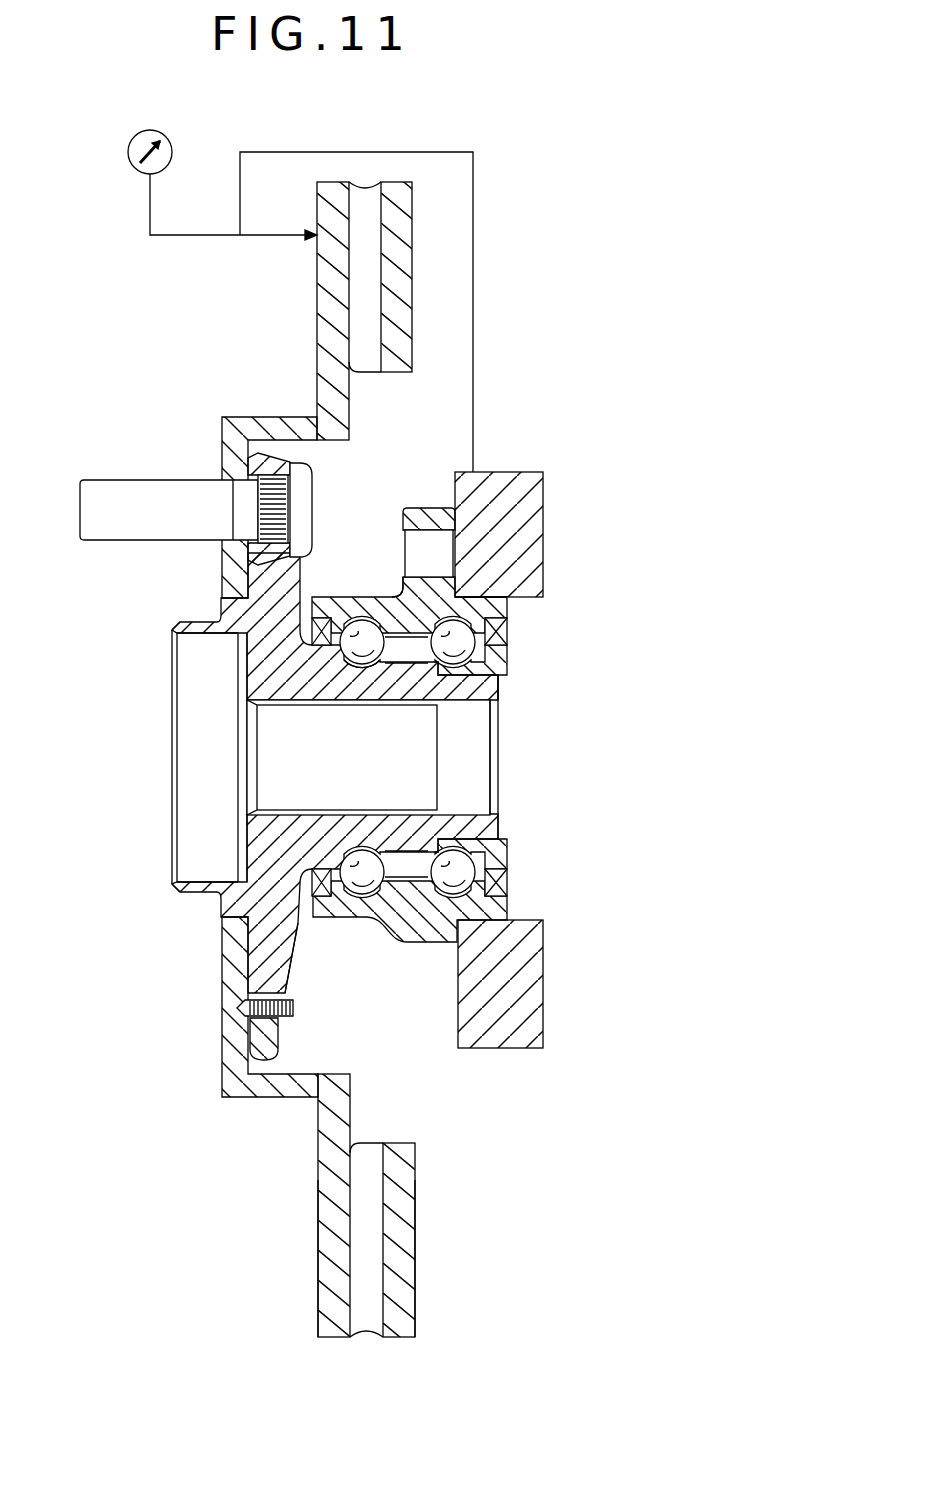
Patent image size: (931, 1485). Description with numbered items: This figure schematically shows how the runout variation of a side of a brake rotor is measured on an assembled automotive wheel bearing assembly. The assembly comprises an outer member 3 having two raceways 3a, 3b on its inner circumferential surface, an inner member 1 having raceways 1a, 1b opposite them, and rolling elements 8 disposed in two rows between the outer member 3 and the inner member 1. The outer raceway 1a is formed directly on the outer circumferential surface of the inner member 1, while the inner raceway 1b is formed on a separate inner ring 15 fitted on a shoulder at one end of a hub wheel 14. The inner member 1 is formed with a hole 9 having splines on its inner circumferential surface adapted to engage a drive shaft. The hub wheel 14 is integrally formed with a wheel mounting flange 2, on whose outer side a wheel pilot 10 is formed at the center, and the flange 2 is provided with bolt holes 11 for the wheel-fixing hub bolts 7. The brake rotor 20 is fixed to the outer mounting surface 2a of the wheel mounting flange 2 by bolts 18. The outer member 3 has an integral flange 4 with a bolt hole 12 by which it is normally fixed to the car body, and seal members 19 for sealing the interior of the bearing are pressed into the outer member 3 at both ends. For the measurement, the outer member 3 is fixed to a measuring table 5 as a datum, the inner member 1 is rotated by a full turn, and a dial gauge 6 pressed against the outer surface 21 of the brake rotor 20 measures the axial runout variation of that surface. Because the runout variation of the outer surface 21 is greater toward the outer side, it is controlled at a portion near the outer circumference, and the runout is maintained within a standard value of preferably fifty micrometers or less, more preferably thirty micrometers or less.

The inner member 1 is at (172, 617).
The outer raceway 1a is at (353, 672).
The inner raceway 1b is at (507, 661).
The wheel mounting flange 2 is at (270, 1035).
The outer mounting surface 2a is at (240, 1030).
The outer member 3 is at (400, 512).
The raceway 3a is at (360, 628).
The raceway 3b is at (455, 603).
The flange 4 is at (432, 540).
The measuring table 5 is at (514, 485).
The dial gauge 6 is at (128, 145).
The hub bolt 7 is at (160, 495).
The rolling elements 8 is at (418, 665).
The hole 9 is at (403, 808).
The wheel pilot 10 is at (193, 892).
The bolt hole 11 is at (265, 505).
The bolt hole 12 is at (440, 545).
The hub wheel 14 is at (450, 703).
The inner ring 15 is at (477, 672).
The bolt 18 is at (235, 1010).
The seal member 19 is at (498, 631).
The brake rotor 20 is at (333, 1214).
The outer surface 21 is at (318, 1262).